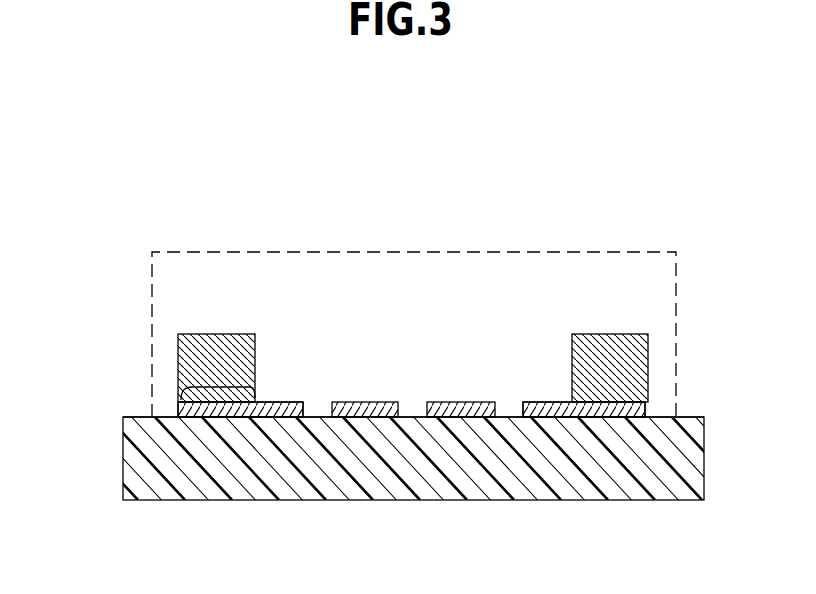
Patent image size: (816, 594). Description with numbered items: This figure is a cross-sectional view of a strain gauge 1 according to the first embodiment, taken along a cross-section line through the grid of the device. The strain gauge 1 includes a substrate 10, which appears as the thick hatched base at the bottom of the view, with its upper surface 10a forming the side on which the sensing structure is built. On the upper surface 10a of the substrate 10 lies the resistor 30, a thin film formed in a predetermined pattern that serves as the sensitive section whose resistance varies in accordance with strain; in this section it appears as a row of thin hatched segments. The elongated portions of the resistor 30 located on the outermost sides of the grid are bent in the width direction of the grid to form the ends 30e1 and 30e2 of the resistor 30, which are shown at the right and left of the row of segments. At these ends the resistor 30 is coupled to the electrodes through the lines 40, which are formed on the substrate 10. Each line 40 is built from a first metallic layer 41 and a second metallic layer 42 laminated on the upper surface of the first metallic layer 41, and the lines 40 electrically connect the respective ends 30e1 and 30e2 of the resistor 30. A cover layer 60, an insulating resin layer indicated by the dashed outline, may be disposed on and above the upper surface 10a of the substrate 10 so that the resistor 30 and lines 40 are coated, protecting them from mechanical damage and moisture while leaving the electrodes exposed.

The strain gauge 1 is at (48, 141).
The substrate 10 is at (410, 488).
The upper surface of the substrate 10a is at (688, 417).
The resistor 30 is at (572, 401).
The end of the resistor 30e1 is at (572, 401).
The end of the resistor 30e2 is at (258, 398).
The line 40 is at (405, 255).
The first metallic layer 41 is at (198, 387).
The second metallic layer 42 is at (237, 347).
The cover layer 60 is at (604, 252).